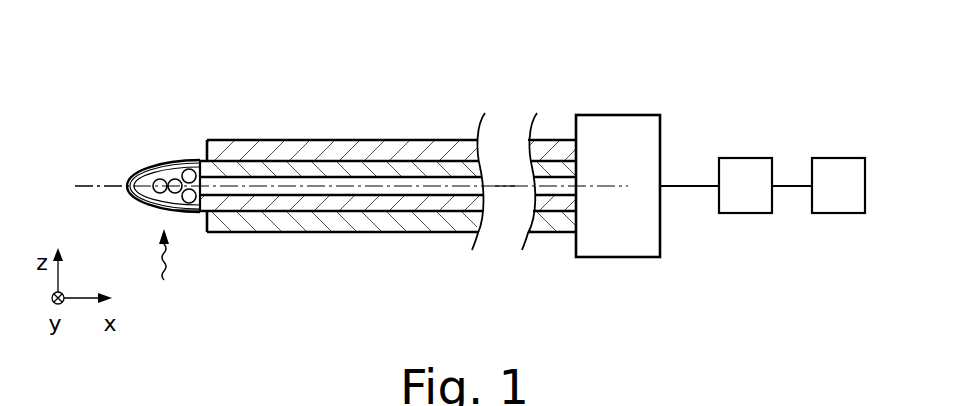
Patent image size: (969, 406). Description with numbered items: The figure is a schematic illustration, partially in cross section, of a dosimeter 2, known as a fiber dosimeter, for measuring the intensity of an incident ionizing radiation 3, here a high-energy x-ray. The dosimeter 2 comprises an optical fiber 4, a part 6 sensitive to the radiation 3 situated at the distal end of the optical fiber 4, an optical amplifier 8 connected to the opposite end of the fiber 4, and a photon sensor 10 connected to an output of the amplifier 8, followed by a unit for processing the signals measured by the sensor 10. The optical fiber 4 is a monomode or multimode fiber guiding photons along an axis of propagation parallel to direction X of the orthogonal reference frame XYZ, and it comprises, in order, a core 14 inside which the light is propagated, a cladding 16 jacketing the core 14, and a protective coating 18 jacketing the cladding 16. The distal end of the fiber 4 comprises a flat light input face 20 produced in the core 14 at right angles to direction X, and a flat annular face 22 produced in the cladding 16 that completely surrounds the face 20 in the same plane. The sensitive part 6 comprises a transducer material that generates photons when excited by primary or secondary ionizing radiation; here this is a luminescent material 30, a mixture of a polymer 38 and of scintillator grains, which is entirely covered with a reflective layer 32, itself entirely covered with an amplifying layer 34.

The dosimeter 2 is at (150, 307).
The ionizing radiation 3 is at (164, 280).
The optical fiber 4 is at (170, 44).
The sensitive part 6 is at (168, 44).
The optical amplifier 8 is at (618, 101).
The photon sensor 10 is at (746, 144).
The core 14 is at (272, 180).
The cladding 16 is at (328, 170).
The protective coating 18 is at (383, 153).
The light input face 20 is at (200, 163).
The face 22 is at (190, 211).
The luminescent material 30 is at (73, 86).
The reflective layer 32 is at (143, 203).
The amplifying layer 34 is at (127, 188).
The polymer 38 is at (145, 166).